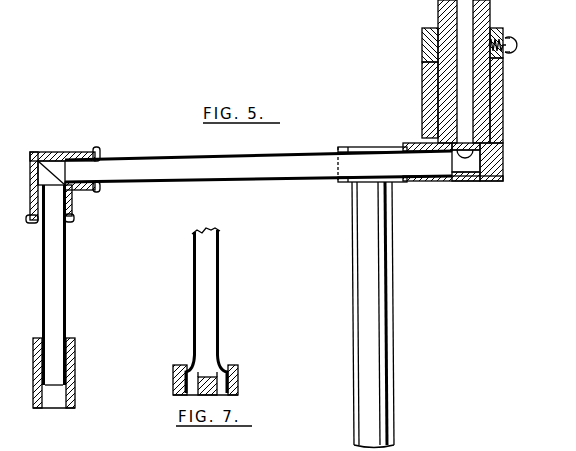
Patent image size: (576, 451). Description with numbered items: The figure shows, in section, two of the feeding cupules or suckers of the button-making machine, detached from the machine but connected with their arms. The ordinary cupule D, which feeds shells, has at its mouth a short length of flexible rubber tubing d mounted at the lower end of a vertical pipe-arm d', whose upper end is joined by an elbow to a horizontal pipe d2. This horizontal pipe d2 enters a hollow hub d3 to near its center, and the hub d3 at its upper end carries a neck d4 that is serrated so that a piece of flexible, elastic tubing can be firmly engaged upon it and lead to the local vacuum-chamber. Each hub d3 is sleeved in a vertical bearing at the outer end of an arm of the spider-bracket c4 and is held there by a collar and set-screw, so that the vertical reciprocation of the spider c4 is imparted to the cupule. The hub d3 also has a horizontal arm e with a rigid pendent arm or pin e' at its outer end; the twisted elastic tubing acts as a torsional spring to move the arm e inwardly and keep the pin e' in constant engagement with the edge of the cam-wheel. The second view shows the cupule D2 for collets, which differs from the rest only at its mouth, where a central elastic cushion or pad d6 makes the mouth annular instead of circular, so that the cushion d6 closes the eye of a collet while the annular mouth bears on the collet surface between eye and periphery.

In FIG. 5, the horizontal pipe d2 is at (258, 166).
In FIG. 5, the horizontal arm e is at (372, 154).
In FIG. 5, the pendent arm or pin e' is at (382, 315).
In FIG. 5, the neck d4 is at (468, 71).
In FIG. 5, the spider-bracket c4 is at (474, 85).
In FIG. 5, the hollow hub d3 is at (463, 162).
In FIG. 5, the vertical pipe-arm d' is at (54, 285).
In FIG. 7, the vertical pipe-arm d' is at (206, 310).
In FIG. 5, the cupule D is at (60, 373).
In FIG. 5, the flexible rubber tubing d is at (54, 396).
In FIG. 7, the flexible rubber tubing d is at (175, 380).
In FIG. 7, the cupule for collets D2 is at (216, 380).
In FIG. 7, the central elastic cushion or pad d6 is at (207, 376).